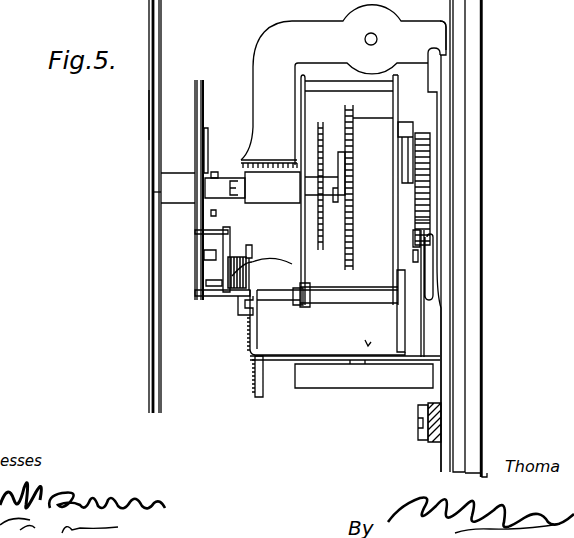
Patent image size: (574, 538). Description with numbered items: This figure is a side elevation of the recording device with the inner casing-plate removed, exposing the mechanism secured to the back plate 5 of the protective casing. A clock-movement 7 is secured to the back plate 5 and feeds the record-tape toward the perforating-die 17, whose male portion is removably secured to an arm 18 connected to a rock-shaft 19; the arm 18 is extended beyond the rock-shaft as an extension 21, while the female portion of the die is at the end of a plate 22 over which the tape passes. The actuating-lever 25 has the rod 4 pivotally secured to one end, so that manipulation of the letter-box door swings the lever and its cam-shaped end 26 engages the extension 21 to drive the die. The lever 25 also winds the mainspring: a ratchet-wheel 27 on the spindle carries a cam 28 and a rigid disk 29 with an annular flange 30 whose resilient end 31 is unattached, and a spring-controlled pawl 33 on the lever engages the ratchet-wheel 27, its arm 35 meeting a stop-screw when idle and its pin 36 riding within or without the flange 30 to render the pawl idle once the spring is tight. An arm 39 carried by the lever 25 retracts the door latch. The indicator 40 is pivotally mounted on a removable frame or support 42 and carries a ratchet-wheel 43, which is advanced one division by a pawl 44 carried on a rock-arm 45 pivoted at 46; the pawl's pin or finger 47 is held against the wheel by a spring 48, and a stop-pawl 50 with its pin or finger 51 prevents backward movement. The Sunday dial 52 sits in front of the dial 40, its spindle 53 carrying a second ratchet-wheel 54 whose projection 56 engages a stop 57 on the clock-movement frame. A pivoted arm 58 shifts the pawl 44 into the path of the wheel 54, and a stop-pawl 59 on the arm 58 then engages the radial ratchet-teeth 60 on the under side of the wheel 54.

The rod 4 is at (428, 436).
The back plate 5 is at (475, 133).
The clock-movement 7 is at (330, 186).
The perforating-die 17 is at (269, 155).
The arm 18 is at (343, 85).
The rock-shaft 19 is at (377, 39).
The extension 21 is at (431, 26).
The plate 22 is at (272, 187).
The actuating-lever 25 is at (442, 327).
The cam-shaped end 26 is at (437, 70).
The ratchet-wheel 27 is at (430, 220).
The cam 28 is at (420, 165).
The disk 29 is at (402, 163).
The annular flange 30 is at (413, 237).
The resilient flange end 31 is at (407, 200).
The spring-controlled pawl 33 is at (434, 266).
The arm of pawl 35 is at (425, 323).
The pin 36 is at (413, 253).
The arm 39 is at (364, 376).
The indicator 40 is at (161, 52).
The frame or support 42 is at (225, 189).
The ratchet-wheel 43 is at (195, 117).
The pawl 44 is at (242, 310).
The rock-arm 45 is at (326, 322).
The pivot 46 is at (359, 339).
The pin or finger 47 is at (212, 296).
The spring 48 is at (255, 373).
The stop-pawl 50 is at (231, 236).
The pin or finger 51 is at (227, 214).
The Sunday dial 52 is at (149, 116).
The spindle 53 is at (153, 192).
The second ratchet-wheel 54 is at (204, 115).
The projection 56 is at (217, 260).
The stop 57 is at (270, 260).
The pivoted arm 58 is at (253, 250).
The stop-pawl 59 is at (215, 284).
The ratchet-teeth 60 is at (205, 252).